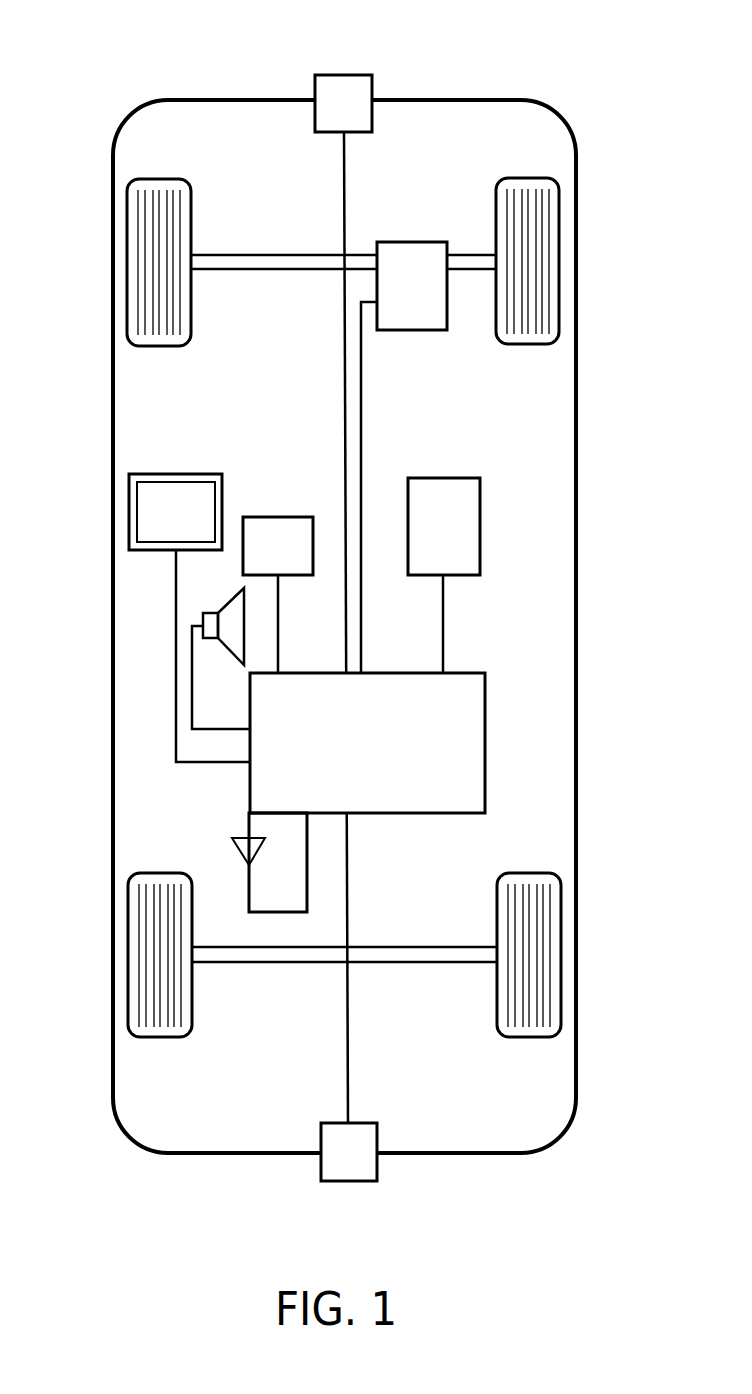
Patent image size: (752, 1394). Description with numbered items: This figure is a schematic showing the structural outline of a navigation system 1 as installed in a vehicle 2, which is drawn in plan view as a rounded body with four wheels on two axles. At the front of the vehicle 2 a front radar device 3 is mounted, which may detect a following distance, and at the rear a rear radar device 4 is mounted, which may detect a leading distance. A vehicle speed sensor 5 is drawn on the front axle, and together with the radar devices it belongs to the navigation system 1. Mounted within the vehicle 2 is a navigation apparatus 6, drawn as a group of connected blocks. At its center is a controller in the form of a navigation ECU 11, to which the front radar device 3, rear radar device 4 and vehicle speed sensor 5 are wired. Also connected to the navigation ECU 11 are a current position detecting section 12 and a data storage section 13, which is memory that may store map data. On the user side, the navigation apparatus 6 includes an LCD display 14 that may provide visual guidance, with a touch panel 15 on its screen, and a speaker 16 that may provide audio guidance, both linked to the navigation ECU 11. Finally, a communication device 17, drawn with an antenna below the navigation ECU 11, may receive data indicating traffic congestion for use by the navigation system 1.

The navigation system 1 is at (372, 576).
The vehicle 2 is at (545, 411).
The front radar device 3 is at (353, 119).
The rear radar device 4 is at (358, 1167).
The vehicle speed sensor 5 is at (422, 302).
The navigation apparatus 6 is at (391, 645).
The navigation ECU 11 is at (383, 761).
The current position detecting section 12 is at (295, 562).
The data storage section 13 is at (460, 541).
The LCD display 14 is at (147, 591).
The touch panel 15 is at (160, 511).
The speaker 16 is at (215, 610).
The communication device 17 is at (245, 885).